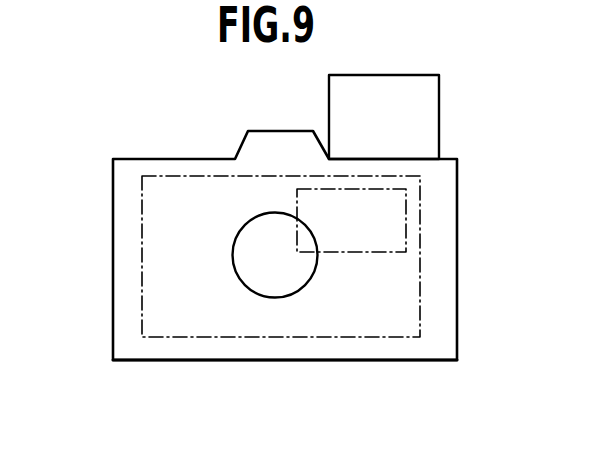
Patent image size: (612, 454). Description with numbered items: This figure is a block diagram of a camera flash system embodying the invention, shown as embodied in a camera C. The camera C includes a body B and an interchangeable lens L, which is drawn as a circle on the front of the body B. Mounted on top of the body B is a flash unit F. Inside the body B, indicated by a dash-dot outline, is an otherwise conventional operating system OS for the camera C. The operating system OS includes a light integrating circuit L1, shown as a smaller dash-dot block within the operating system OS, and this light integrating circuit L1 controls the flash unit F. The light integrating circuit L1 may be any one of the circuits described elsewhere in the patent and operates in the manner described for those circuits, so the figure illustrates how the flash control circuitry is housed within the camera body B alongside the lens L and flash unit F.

The body B is at (445, 251).
The camera C is at (342, 353).
The flash unit F is at (430, 126).
The operating system OS is at (170, 180).
The light integrating circuit L1 is at (402, 228).
The interchangeable lens L is at (246, 278).